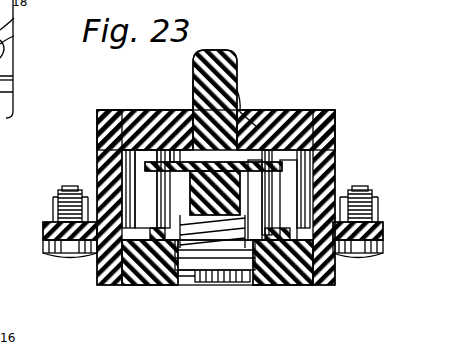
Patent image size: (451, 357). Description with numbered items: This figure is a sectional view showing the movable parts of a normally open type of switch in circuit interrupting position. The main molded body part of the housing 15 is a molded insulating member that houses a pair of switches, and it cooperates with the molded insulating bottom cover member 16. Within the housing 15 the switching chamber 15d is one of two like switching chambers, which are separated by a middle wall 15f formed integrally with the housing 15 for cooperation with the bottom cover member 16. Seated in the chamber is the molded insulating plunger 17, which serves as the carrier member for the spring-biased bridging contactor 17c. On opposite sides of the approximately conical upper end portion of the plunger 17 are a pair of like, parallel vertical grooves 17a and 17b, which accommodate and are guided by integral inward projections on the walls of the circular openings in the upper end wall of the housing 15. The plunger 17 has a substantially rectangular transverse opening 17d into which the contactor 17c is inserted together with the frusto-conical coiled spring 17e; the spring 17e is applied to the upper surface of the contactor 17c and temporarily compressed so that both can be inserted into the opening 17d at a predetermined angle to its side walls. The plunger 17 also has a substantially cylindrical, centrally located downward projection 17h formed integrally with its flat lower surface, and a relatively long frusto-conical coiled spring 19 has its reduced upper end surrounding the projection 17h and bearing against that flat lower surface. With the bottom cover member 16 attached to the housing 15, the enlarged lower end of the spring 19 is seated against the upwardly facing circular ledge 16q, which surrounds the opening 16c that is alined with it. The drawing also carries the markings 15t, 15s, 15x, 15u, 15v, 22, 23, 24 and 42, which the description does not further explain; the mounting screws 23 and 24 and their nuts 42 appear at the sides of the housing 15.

The main molded body part of housing 15 is at (330, 126).
The housing top wall 15t is at (141, 110).
The housing top wall portion 15s is at (283, 112).
The sleeve 15x is at (115, 162).
The switching chamber 15d is at (307, 184).
The middle wall 15f is at (158, 276).
The housing portion 15u is at (16, 20).
The housing portion 15v is at (16, 38).
The molded insulating bottom cover member 16 is at (292, 283).
The opening 16c is at (230, 284).
The circular ledge 16q is at (228, 284).
The plunger 17 is at (232, 58).
The vertical groove 17a is at (244, 90).
The vertical groove 17b is at (195, 88).
The bridging contactor 17c is at (172, 184).
The transverse opening 17d is at (258, 120).
The coiled spring 17e is at (172, 112).
The downward projection 17h is at (208, 286).
The coiled spring 19 is at (193, 285).
The lead 22 is at (15, 82).
The mounting screw 23 is at (385, 229).
The mounting screw 24 is at (45, 230).
The nut 42 is at (77, 255).